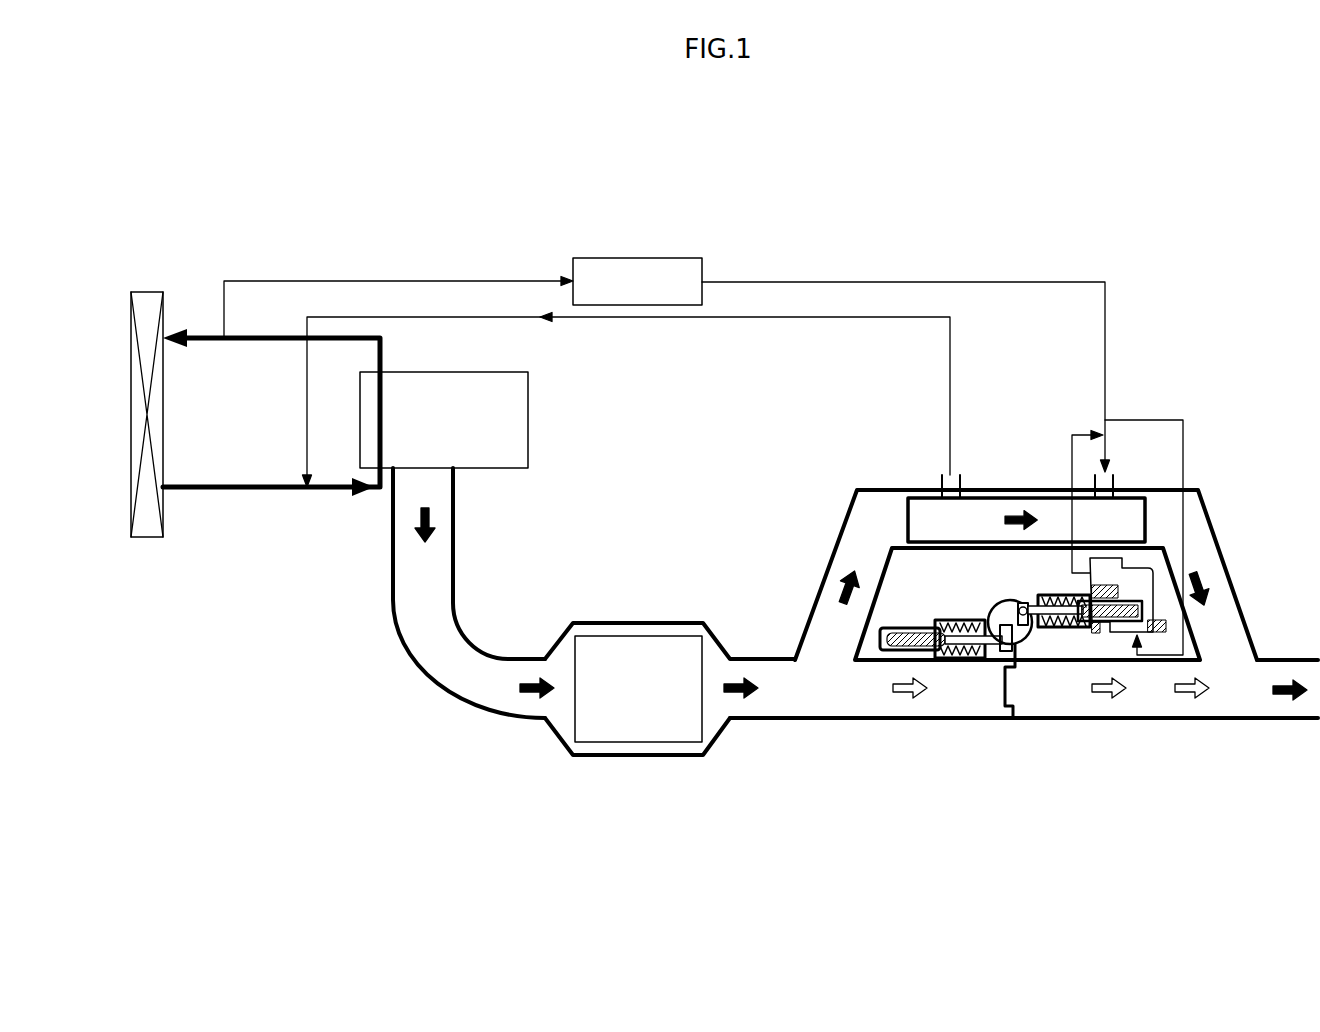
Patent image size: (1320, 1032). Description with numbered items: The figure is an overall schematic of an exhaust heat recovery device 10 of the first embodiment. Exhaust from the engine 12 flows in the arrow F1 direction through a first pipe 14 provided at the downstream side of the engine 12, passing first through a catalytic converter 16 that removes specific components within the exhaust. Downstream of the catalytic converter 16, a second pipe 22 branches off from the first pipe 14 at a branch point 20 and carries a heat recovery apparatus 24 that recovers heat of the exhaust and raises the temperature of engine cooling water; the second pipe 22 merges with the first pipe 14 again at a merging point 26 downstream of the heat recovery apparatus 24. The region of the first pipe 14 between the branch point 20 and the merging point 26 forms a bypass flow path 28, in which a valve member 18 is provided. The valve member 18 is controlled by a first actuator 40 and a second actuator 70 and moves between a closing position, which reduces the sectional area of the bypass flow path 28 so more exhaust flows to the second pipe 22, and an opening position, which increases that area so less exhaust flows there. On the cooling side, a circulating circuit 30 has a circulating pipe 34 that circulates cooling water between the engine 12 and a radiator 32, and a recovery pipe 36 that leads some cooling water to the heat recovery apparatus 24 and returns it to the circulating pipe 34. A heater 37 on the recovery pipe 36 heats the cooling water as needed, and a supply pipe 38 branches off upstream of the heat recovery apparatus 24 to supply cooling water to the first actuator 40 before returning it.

The exhaust heat recovery device 10 is at (1165, 175).
The engine 12 is at (528, 420).
The first pipe 14 is at (433, 683).
The catalytic converter 16 is at (637, 742).
The valve member 18 is at (1020, 660).
The branch point 20 is at (822, 718).
The second pipe 22 is at (1153, 490).
The heat recovery apparatus 24 is at (916, 497).
The merging point 26 is at (1238, 718).
The bypass flow path 28 is at (1208, 750).
The circulating circuit 30 is at (410, 234).
The radiator 32 is at (145, 537).
The circulating pipe 34 is at (223, 489).
The recovery pipe 36 is at (862, 282).
The heater 37 is at (632, 258).
The supply pipe 38 is at (1183, 525).
The first actuator 40 is at (1057, 595).
The second actuator 70 is at (946, 622).
The arrow F1 direction F1 is at (445, 517).